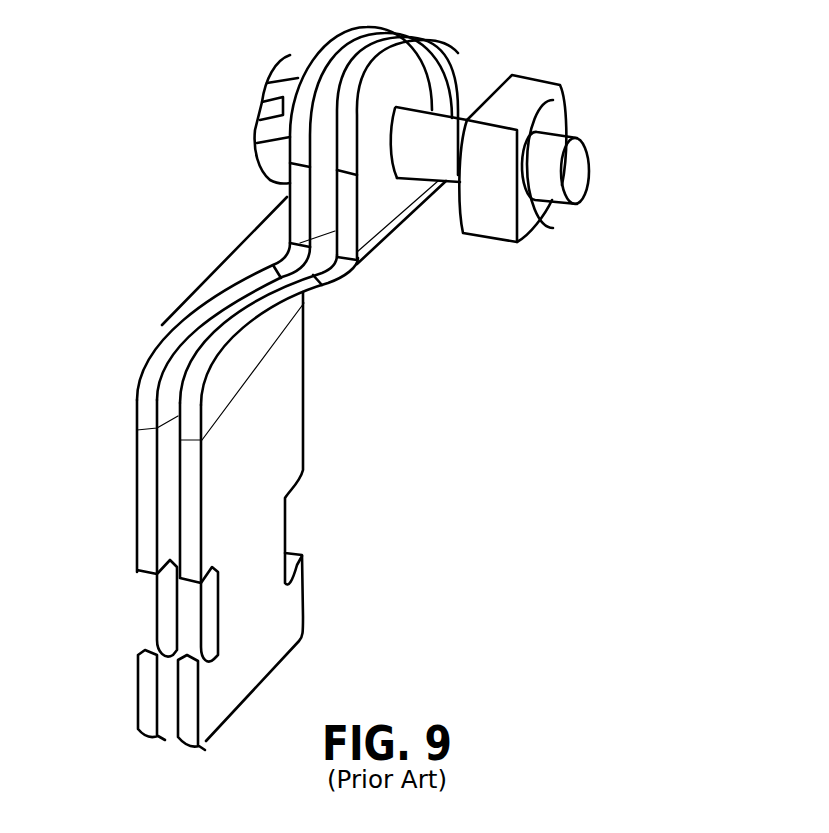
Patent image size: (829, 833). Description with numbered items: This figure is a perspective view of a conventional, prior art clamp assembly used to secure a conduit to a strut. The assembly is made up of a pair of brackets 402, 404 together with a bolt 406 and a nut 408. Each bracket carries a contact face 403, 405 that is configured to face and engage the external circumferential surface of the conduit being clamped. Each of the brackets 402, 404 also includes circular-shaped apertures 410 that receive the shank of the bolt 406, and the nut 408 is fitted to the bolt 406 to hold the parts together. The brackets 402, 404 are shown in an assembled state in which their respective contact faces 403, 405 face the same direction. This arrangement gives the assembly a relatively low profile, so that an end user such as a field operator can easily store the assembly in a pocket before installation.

The bracket 402 is at (136, 732).
The contact face 403 is at (167, 482).
The bracket 404 is at (183, 746).
The contact face 405 is at (263, 395).
The bolt 406 is at (433, 150).
The nut 408 is at (533, 100).
The circular-shaped apertures 410 is at (345, 104).